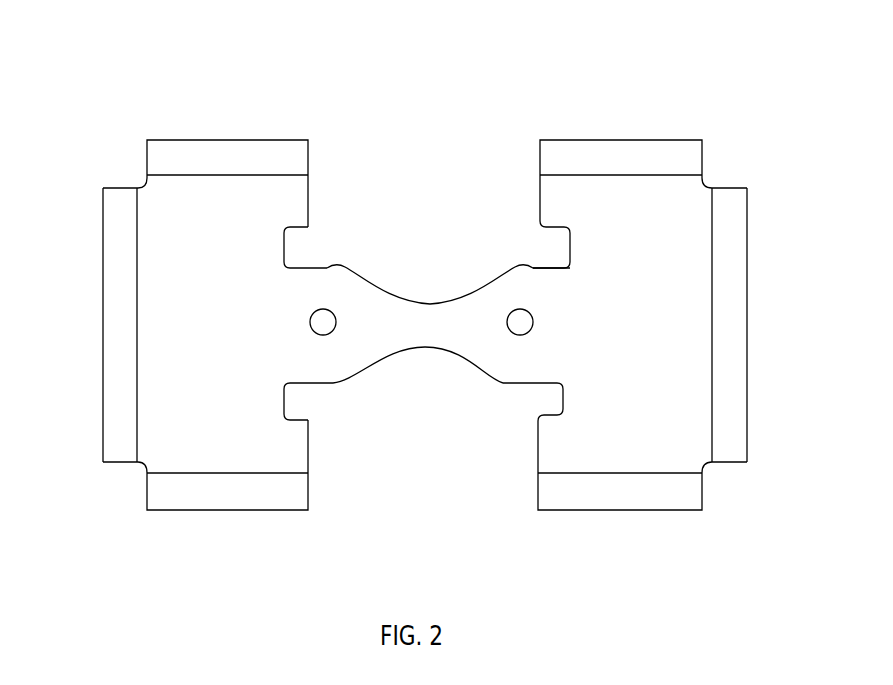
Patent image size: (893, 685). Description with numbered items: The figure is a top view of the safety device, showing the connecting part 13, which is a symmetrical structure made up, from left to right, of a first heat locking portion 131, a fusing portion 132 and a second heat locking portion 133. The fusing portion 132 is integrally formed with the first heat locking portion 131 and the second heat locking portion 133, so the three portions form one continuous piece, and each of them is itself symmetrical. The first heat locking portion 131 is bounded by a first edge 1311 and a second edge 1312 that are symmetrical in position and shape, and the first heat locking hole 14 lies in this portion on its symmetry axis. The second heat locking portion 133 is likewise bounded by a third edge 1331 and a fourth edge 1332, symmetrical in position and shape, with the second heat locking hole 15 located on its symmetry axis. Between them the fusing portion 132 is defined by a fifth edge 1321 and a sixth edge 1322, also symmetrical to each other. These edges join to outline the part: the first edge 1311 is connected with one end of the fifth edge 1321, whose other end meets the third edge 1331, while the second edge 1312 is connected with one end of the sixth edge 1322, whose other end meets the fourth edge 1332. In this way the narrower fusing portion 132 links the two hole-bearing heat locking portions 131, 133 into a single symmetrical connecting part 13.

The connecting part 13 is at (568, 83).
The first heat locking portion 131 is at (352, 288).
The fusing portion 132 is at (430, 318).
The second heat locking portion 133 is at (498, 292).
The first edge 1311 is at (313, 267).
The second edge 1312 is at (405, 350).
The fifth edge 1321 is at (420, 305).
The sixth edge 1322 is at (420, 347).
The third edge 1331 is at (523, 268).
The fourth edge 1332 is at (530, 385).
The first heat locking hole 14 is at (323, 322).
The second heat locking hole 15 is at (520, 322).